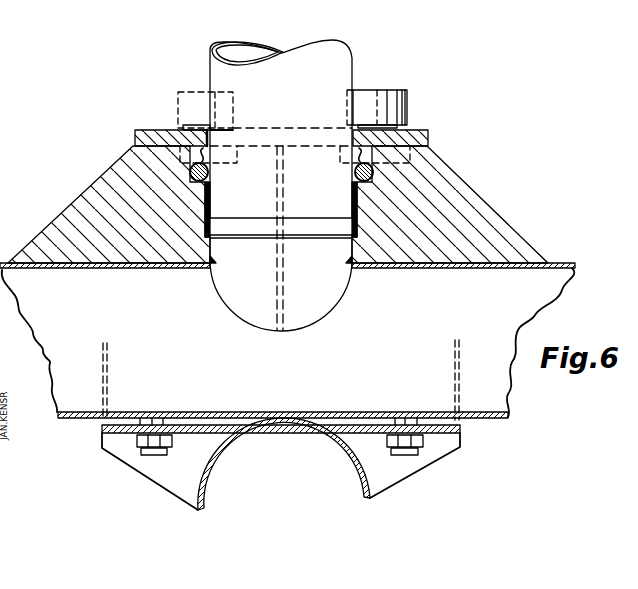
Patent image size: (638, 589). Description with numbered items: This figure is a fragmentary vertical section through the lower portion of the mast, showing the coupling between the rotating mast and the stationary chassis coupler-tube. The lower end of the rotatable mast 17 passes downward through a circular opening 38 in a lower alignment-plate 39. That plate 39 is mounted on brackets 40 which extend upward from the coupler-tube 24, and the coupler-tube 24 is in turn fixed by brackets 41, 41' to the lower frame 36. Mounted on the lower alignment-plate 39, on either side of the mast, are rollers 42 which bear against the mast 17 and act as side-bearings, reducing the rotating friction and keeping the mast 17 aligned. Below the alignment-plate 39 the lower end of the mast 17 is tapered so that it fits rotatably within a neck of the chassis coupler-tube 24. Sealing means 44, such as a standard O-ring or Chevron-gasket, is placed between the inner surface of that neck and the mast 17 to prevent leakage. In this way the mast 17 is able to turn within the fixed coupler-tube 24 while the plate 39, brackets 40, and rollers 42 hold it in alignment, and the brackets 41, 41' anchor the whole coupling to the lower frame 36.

The rotatable mast 17 is at (301, 89).
The coupler-tube 24 is at (420, 333).
The lower frame 36 is at (340, 467).
The circular opening 38 is at (225, 135).
The lower alignment-plate 39 is at (428, 131).
The brackets 40 is at (488, 214).
The brackets 41 is at (129, 381).
The brackets 41' is at (438, 380).
The rollers 42 is at (180, 104).
The sealing means 44 is at (353, 170).